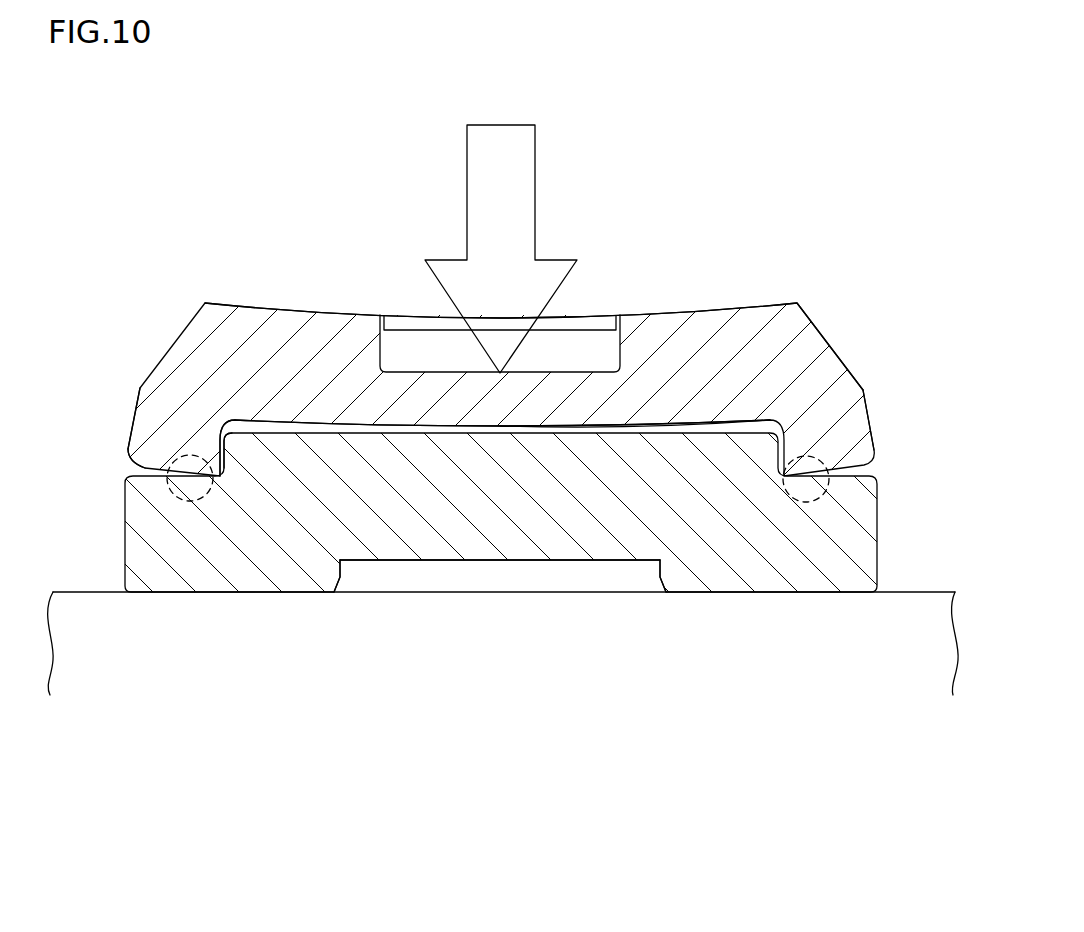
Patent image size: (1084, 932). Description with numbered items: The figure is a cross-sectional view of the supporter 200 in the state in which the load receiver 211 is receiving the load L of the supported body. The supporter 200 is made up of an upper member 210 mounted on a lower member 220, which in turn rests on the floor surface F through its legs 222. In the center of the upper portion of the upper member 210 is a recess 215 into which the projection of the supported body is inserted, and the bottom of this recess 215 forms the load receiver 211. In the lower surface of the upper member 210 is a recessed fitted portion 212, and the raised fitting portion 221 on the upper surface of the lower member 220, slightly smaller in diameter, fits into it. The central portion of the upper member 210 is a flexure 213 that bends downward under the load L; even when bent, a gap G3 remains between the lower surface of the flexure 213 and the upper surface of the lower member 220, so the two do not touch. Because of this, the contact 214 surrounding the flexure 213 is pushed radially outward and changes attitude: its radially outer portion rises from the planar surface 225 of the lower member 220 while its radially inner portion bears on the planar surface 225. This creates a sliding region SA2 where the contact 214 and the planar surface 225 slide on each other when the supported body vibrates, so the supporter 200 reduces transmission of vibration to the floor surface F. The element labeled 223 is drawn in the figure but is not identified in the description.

The supporter 200 is at (833, 312).
The load L is at (537, 232).
The upper member 210 is at (713, 306).
The load receiver 211 is at (408, 331).
The fitted portion 212 is at (240, 430).
The flexure 213 is at (505, 400).
The contact 214 is at (165, 437).
The recess 215 is at (383, 340).
The gap G3 is at (493, 428).
The lower member 220 is at (878, 537).
The fitting portion 221 is at (222, 442).
The legs 222 is at (370, 593).
The bottom recess 223 is at (507, 517).
The planar surface 225 is at (130, 448).
The sliding region SA2 is at (205, 500).
The floor surface F is at (90, 592).